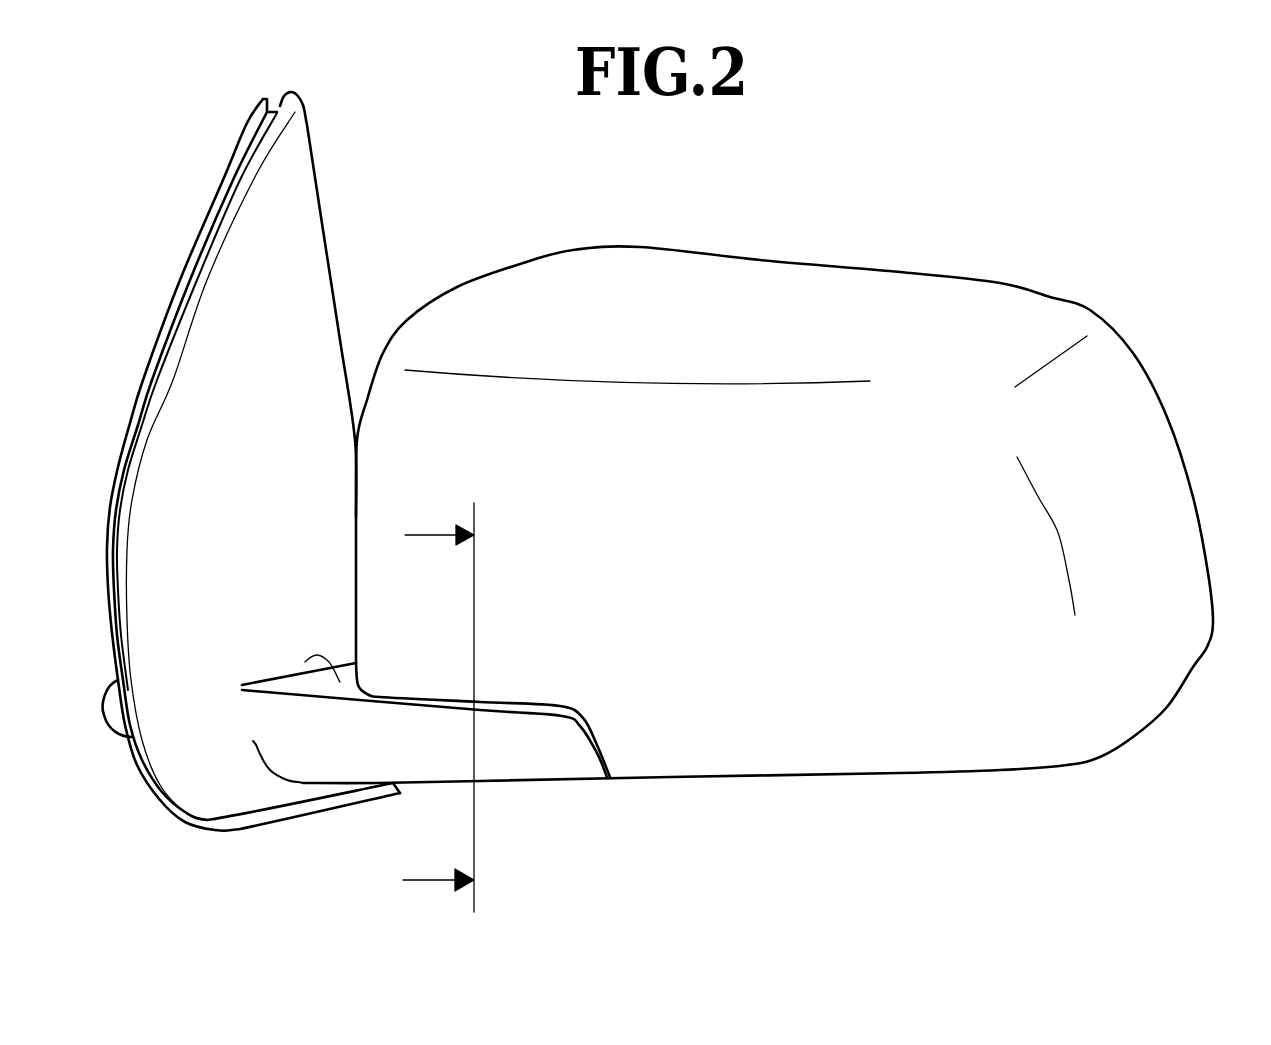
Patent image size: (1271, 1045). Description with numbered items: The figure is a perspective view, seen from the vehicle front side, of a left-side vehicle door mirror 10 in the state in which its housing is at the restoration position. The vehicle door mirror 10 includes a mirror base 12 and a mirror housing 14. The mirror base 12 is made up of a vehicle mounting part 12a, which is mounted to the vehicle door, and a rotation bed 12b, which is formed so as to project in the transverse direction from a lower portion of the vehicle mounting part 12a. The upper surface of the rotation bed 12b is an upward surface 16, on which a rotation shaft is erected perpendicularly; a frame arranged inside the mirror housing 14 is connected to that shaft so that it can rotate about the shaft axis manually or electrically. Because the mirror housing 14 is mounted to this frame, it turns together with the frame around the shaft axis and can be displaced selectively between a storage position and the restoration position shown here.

The vehicle door mirror 10 is at (1135, 188).
The mirror base 12 is at (283, 263).
The vehicle mounting part 12a is at (272, 330).
The rotation bed 12b is at (517, 743).
The mirror housing 14 is at (818, 305).
The upward surface 16 is at (305, 662).